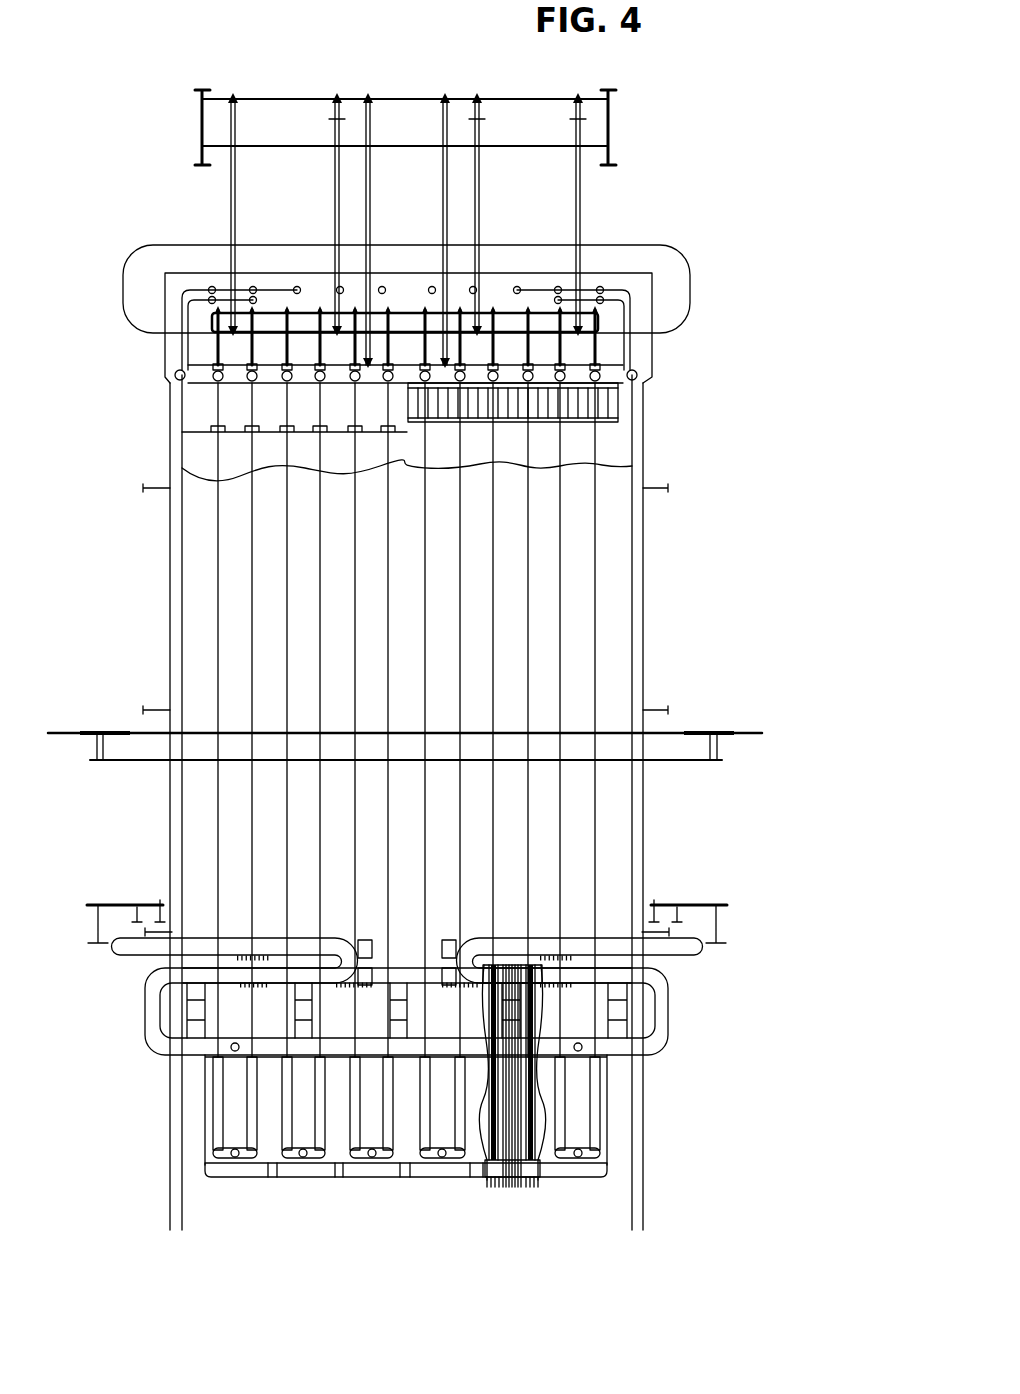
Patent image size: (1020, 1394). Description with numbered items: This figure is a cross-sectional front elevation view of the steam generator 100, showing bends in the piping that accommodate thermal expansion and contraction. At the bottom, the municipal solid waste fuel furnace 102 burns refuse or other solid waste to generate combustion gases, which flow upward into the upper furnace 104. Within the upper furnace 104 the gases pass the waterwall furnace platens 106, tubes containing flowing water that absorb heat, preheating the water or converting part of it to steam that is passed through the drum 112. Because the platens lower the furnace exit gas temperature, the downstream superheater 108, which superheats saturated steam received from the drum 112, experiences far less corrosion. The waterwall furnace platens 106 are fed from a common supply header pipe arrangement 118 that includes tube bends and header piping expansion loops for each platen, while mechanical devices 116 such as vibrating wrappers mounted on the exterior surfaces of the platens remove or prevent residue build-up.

The steam generator 100 is at (92, 1008).
The municipal solid waste fuel furnace 102 is at (590, 1195).
The upper furnace 104 is at (643, 612).
The waterwall furnace platens 106 is at (215, 455).
The superheater 108 is at (620, 398).
The drum 112 is at (662, 246).
The mechanical devices 116 is at (560, 1197).
The common supply header pipe arrangement 118 is at (668, 1003).